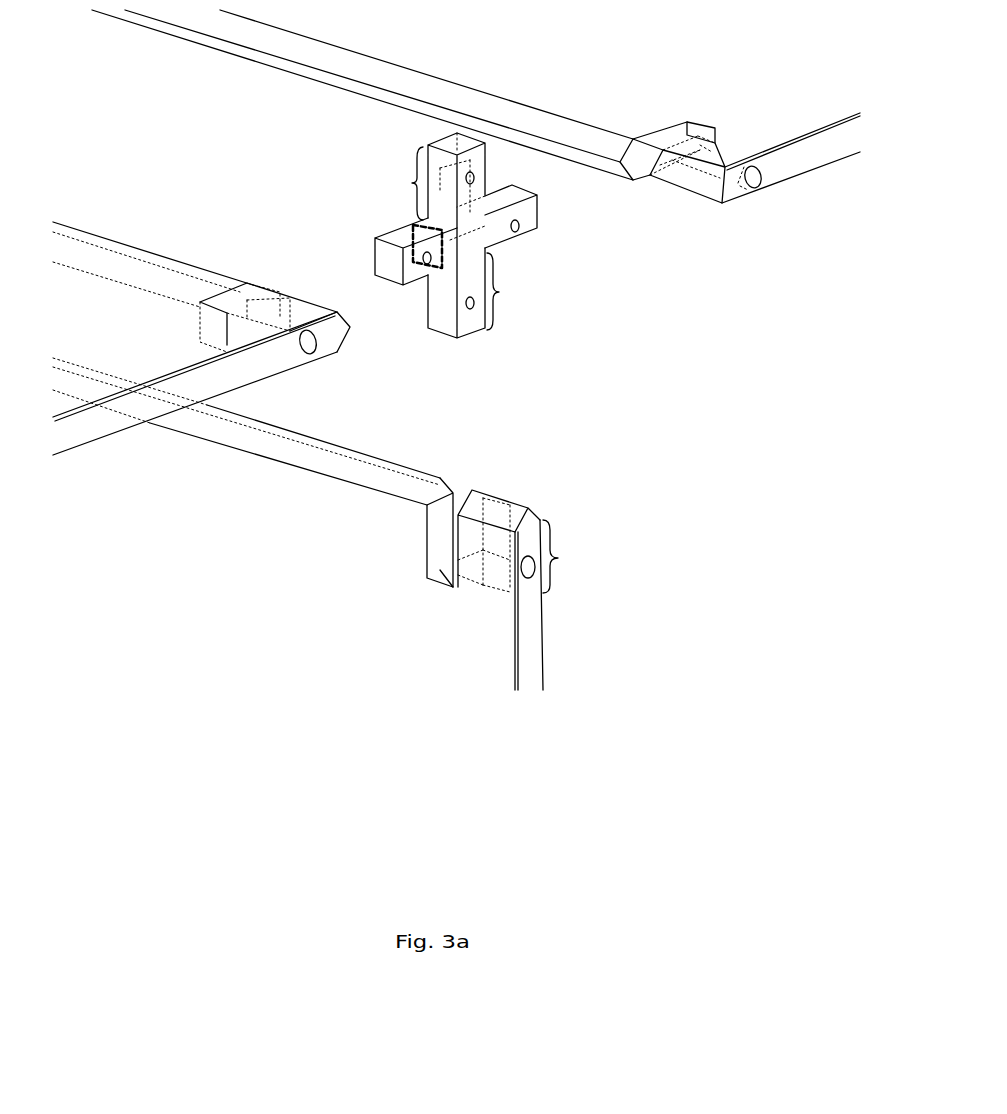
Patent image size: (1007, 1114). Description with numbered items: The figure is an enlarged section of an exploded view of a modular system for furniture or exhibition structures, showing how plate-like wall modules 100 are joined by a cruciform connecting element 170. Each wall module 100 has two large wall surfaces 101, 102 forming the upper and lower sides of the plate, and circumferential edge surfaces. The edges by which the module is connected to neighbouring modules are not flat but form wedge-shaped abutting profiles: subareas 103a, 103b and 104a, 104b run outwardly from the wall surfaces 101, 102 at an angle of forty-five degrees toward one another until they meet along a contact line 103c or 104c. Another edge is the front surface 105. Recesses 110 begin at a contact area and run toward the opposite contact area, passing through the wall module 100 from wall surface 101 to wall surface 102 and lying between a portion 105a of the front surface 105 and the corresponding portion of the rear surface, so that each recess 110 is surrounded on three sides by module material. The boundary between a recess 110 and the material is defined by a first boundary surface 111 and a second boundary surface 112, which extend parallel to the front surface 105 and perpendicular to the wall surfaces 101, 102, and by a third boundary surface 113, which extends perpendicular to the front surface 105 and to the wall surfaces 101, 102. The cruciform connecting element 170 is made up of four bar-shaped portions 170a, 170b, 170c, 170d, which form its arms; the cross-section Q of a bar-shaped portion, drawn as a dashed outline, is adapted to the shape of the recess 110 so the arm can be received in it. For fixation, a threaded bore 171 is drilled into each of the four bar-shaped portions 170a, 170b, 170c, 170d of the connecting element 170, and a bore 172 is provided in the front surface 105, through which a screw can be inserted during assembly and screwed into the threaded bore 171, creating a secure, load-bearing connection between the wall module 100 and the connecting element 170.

The wall module 100 is at (740, 83).
The wall surface 101 is at (562, 92).
The wall surface 102 is at (806, 186).
The subarea of edge surface 103a is at (412, 83).
The subarea of edge surface 103b is at (380, 98).
The contact line 103c is at (300, 64).
The subarea of edge surface 104a is at (271, 456).
The subarea of edge surface 104b is at (448, 480).
The contact line 104c is at (349, 446).
The front surface 105 is at (828, 148).
The portion of front surface 105a is at (560, 558).
The recess 110 is at (648, 175).
The first boundary surface 111 is at (643, 148).
The second boundary surface 112 is at (700, 145).
The third boundary surface 113 is at (693, 130).
The cruciform connecting element 170 is at (469, 242).
The bar-shaped portion 170a is at (500, 200).
The bar-shaped portion 170b is at (412, 183).
The bar-shaped portion 170c is at (438, 292).
The bar-shaped portion 170d is at (499, 292).
The threaded bore 171 is at (440, 172).
The bore 172 is at (742, 175).
The cross-section Q is at (441, 255).